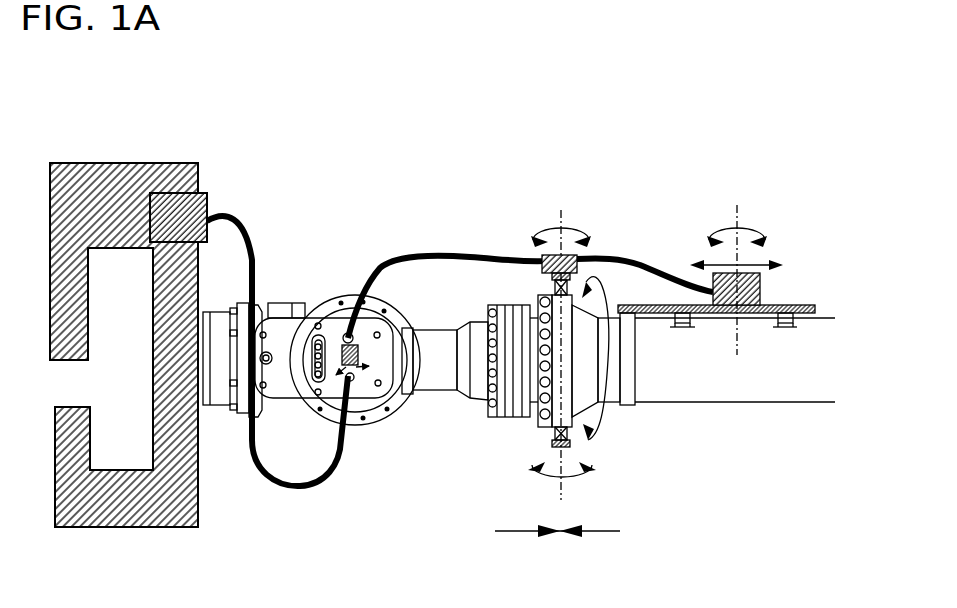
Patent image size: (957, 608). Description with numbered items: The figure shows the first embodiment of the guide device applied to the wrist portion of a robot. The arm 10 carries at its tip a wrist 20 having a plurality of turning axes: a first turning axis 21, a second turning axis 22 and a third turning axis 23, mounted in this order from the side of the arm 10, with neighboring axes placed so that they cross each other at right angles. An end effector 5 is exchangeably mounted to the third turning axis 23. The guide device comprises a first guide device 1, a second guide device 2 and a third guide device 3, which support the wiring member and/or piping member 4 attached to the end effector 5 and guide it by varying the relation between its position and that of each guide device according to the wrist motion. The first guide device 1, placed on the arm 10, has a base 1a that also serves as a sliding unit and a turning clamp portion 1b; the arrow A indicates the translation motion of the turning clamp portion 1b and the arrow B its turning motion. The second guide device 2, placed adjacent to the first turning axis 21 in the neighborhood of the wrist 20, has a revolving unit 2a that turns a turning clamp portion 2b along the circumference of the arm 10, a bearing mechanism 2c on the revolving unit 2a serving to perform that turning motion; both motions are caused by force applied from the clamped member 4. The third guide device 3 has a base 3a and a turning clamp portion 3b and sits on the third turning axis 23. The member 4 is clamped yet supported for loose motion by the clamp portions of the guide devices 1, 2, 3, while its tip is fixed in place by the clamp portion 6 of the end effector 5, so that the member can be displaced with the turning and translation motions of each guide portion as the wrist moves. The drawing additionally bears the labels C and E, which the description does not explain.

The first guide device 1 is at (743, 276).
The base 1a is at (813, 305).
The turning clamp portion 1b is at (748, 292).
The second guide device 2 is at (570, 309).
The revolving unit 2a is at (582, 452).
The turning clamp portion 2b is at (578, 257).
The bearing mechanism 2c is at (548, 276).
The third guide device 3 is at (321, 332).
The base 3a is at (353, 378).
The turning clamp portion 3b is at (375, 368).
The wiring member and/or piping member 4 is at (455, 253).
The end effector 5 is at (140, 174).
The clamp portion 6 is at (207, 195).
The arm 10 is at (770, 385).
The wrist 20 is at (354, 490).
The first turning axis 21 is at (512, 395).
The second turning axis 22 is at (350, 293).
The third turning axis 23 is at (216, 337).
The arrow A is at (728, 261).
The arrow B is at (736, 220).
The rotation C is at (599, 354).
The point E is at (367, 348).